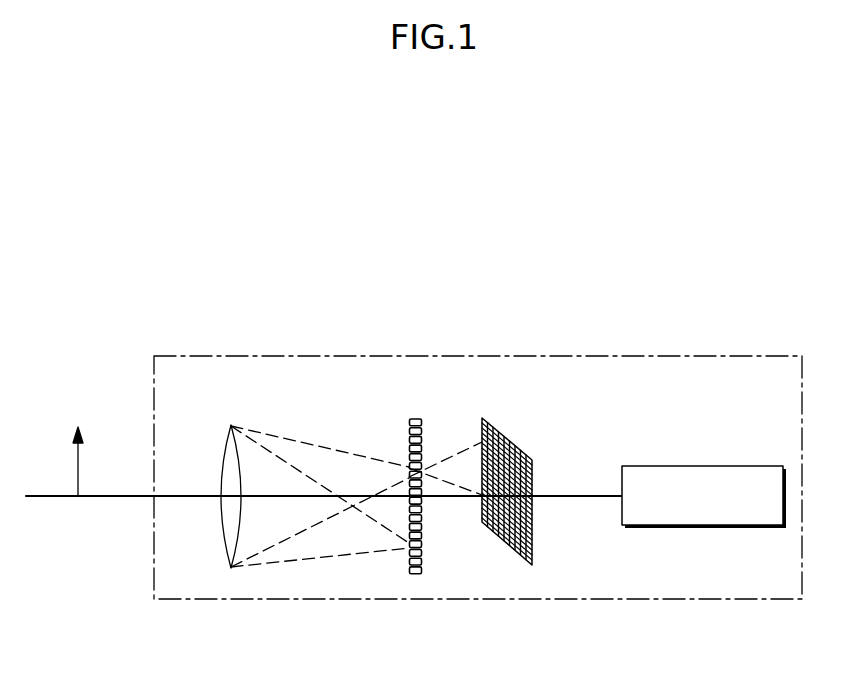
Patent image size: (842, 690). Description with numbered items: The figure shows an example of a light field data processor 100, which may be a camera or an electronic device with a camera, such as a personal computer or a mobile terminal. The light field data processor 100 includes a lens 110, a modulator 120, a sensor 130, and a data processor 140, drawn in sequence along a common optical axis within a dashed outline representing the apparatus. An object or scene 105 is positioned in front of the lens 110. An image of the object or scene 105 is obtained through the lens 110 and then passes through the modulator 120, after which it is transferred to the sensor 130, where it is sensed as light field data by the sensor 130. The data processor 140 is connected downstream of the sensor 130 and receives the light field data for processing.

The light field data processor 100 is at (442, 600).
The object or scene 105 is at (77, 458).
The lens 110 is at (229, 427).
The modulator 120 is at (415, 418).
The sensor 130 is at (484, 418).
The data processor 140 is at (702, 530).